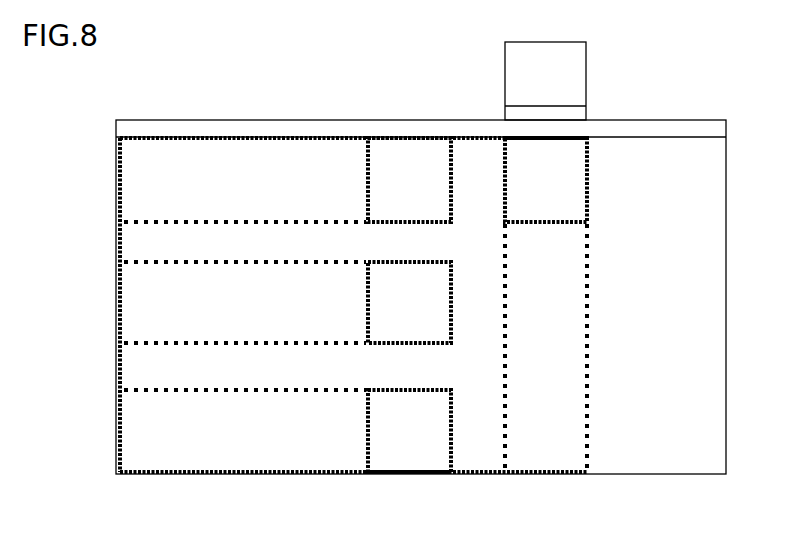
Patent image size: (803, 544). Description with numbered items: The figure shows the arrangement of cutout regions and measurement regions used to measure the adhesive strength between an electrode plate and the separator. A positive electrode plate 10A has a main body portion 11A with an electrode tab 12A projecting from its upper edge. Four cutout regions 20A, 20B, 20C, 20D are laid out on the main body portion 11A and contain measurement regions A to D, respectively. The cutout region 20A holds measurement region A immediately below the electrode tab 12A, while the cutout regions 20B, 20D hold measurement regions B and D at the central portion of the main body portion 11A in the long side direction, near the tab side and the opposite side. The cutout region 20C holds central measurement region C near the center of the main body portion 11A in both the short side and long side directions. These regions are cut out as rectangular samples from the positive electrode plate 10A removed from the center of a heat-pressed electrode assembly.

The positive electrode plate 10A is at (728, 107).
The main body portion 11A is at (668, 438).
The electrode tab 12A is at (545, 68).
The cutout region 20A is at (590, 253).
The cutout region 20B is at (140, 222).
The cutout region 20C is at (140, 343).
The cutout region 20D is at (140, 390).